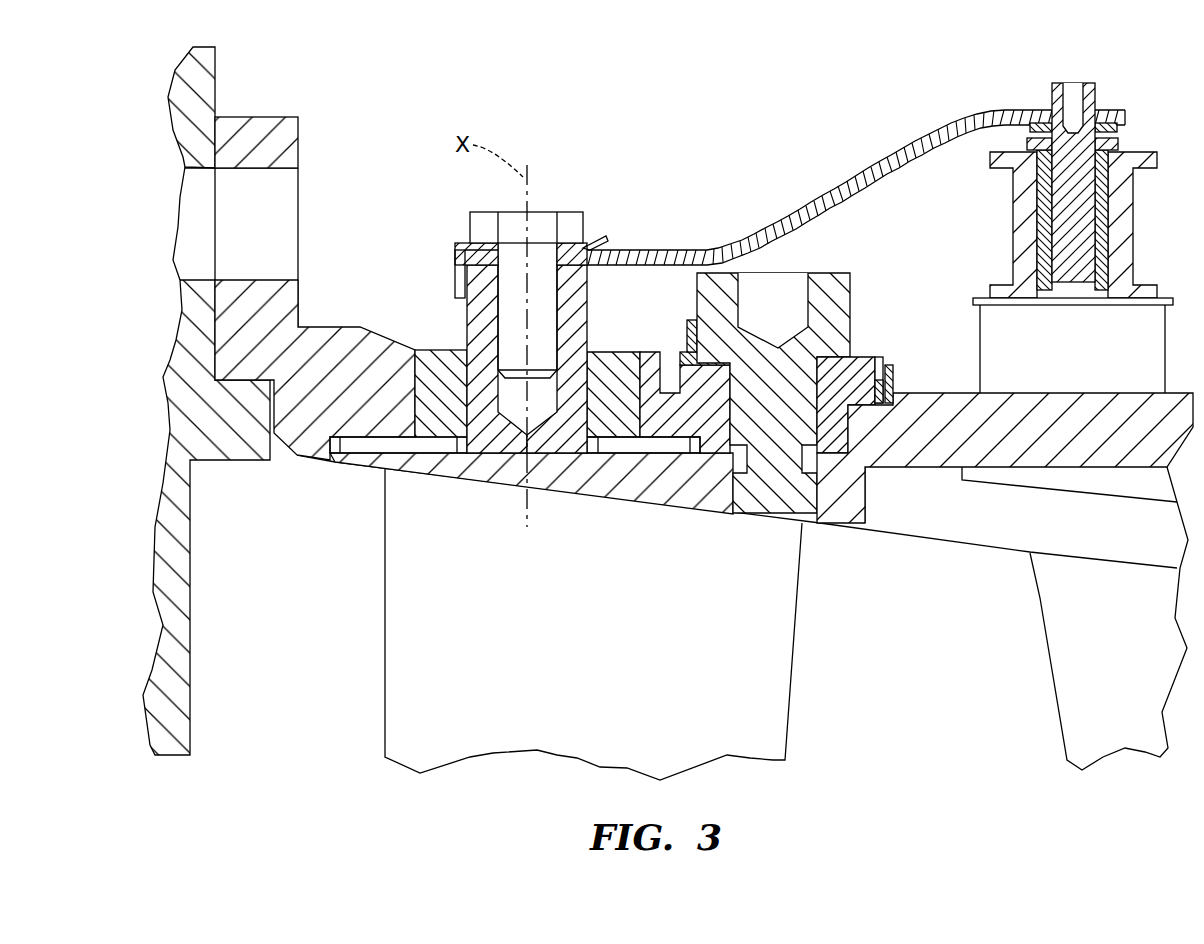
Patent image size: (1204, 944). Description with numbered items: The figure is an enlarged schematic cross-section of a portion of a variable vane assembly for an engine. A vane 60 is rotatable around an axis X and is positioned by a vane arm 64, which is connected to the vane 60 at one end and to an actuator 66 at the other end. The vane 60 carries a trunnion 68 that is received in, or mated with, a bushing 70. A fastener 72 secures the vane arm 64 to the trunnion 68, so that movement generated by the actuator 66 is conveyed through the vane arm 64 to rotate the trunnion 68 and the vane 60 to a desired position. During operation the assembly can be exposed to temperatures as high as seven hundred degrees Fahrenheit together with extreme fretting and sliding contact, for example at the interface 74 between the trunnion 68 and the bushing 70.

The vane 60 is at (574, 620).
The vane arm 64 is at (867, 170).
The actuator 66 is at (1115, 112).
The trunnion 68 is at (468, 330).
The bushing 70 is at (433, 370).
The fastener 72 is at (575, 212).
The interface 74 is at (485, 425).